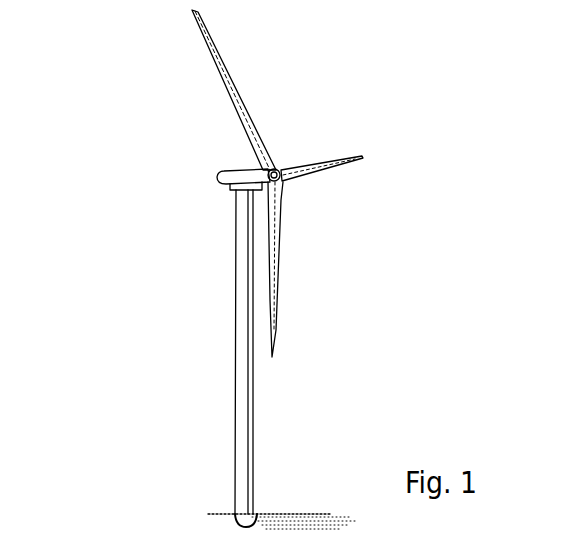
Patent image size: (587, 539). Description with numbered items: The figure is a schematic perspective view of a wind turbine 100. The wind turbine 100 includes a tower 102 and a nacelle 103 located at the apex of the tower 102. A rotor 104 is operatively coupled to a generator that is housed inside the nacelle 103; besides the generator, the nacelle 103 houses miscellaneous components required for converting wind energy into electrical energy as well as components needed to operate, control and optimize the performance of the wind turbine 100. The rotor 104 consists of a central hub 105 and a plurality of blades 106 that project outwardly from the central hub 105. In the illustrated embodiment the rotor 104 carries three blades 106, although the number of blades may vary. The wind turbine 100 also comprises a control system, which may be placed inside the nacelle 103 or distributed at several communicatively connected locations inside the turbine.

The wind turbine 100 is at (106, 135).
The tower 102 is at (237, 296).
The nacelle 103 is at (232, 173).
The rotor 104 is at (346, 247).
The central hub 105 is at (277, 168).
The blades 106 is at (238, 97).